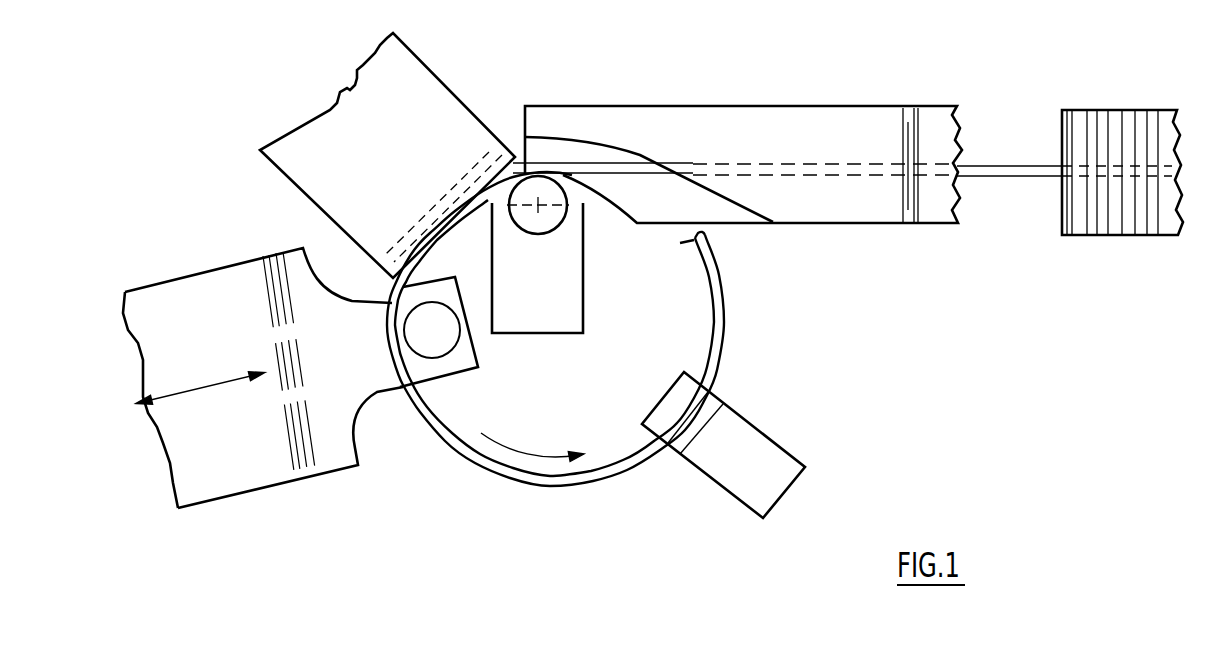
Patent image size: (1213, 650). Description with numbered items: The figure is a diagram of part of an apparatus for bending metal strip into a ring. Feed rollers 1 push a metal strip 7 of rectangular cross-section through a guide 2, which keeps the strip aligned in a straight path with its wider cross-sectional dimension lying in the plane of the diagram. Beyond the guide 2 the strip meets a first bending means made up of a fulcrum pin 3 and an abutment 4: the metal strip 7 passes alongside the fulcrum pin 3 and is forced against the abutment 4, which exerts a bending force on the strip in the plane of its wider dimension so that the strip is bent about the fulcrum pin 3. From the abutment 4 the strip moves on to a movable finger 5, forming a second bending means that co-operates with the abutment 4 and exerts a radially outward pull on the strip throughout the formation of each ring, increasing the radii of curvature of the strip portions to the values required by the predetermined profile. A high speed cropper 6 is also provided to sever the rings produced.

The feed rollers 1 is at (1132, 118).
The guide 2 is at (805, 118).
The fulcrum pin 3 is at (552, 217).
The abutment 4 is at (448, 107).
The movable finger 5 is at (430, 347).
The high speed cropper 6 is at (763, 457).
The metal strip 7 is at (997, 172).